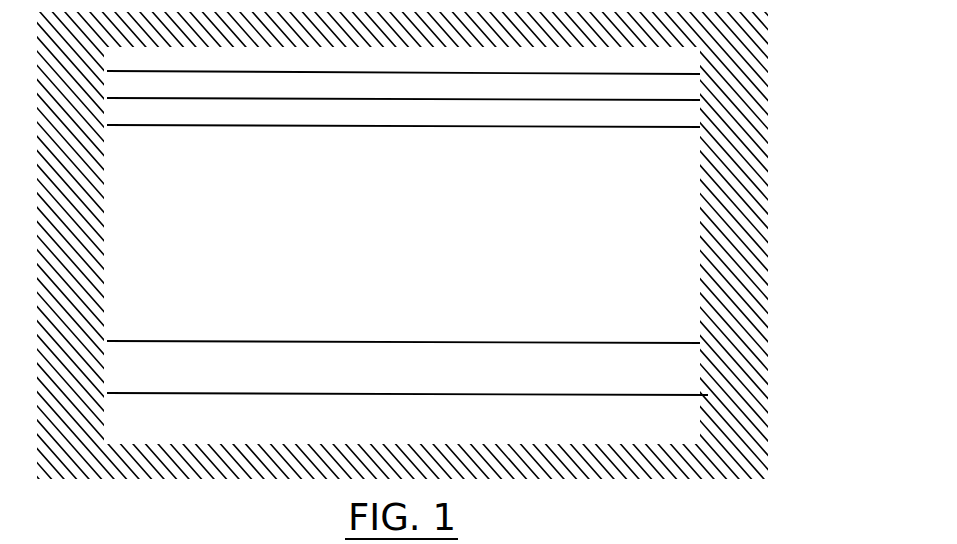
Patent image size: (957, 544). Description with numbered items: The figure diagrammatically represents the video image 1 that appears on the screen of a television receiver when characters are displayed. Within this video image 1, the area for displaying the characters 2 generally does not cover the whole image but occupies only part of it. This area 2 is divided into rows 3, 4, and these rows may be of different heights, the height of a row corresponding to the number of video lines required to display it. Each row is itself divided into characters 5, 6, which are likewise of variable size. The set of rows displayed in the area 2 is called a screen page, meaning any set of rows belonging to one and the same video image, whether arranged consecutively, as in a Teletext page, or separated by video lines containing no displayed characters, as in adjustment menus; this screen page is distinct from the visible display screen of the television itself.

The video image 1 is at (478, 245).
The area for displaying the characters 2 is at (478, 245).
The row 3 is at (677, 113).
The row 4 is at (660, 372).
The character 5 is at (403, 141).
The character 6 is at (403, 327).